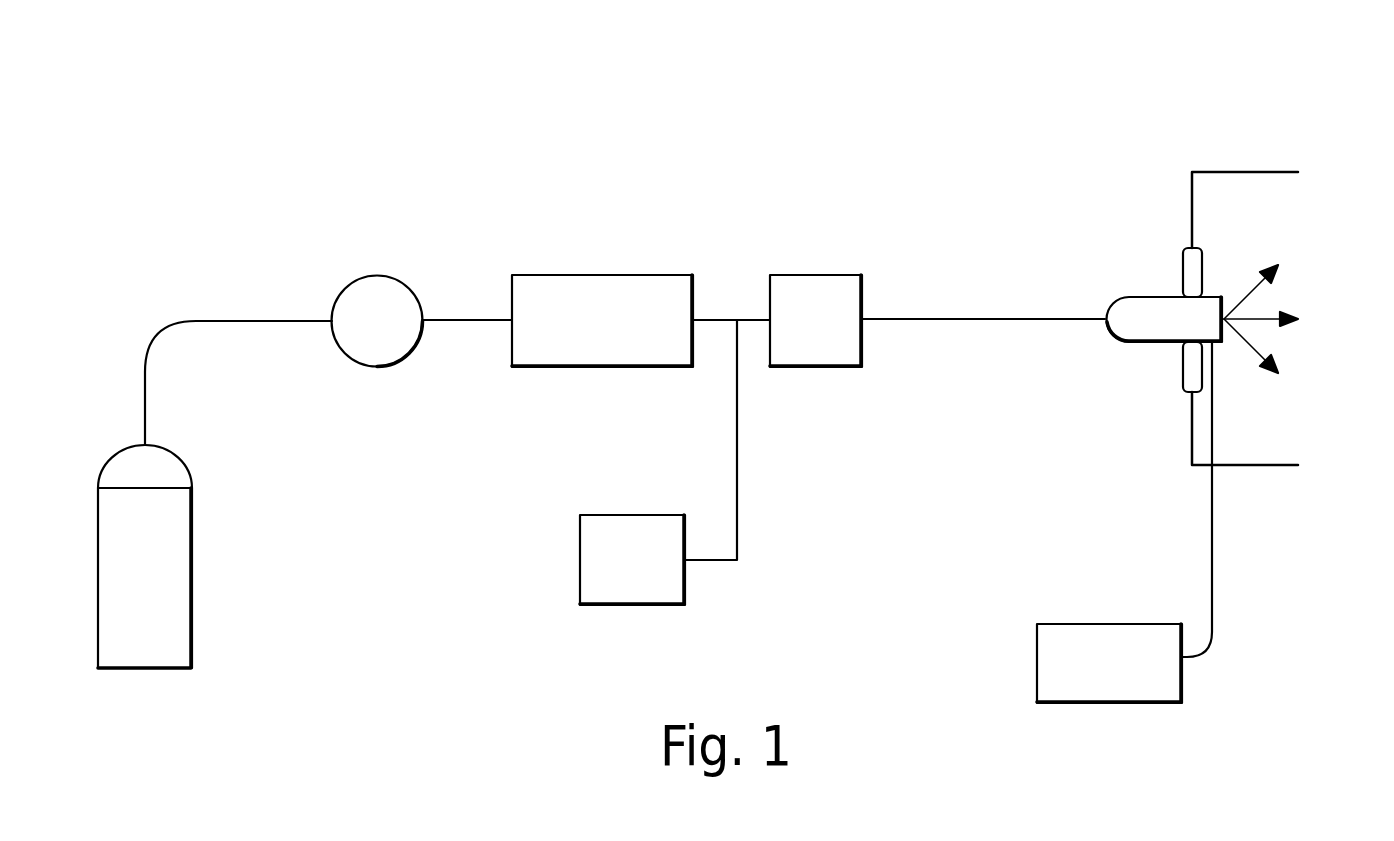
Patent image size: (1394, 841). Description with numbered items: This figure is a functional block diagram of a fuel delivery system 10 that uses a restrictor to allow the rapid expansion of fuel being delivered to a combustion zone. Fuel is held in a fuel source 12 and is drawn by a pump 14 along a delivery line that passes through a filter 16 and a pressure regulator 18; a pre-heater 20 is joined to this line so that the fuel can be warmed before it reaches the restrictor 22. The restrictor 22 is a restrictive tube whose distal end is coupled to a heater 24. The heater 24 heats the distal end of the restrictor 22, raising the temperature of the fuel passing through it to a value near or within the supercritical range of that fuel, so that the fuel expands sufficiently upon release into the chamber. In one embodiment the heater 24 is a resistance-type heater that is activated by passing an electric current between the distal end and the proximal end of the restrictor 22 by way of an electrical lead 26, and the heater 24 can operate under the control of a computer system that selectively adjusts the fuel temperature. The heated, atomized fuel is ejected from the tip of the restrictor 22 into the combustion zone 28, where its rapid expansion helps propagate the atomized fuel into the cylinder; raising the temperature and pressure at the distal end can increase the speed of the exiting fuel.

The fuel delivery system 10 is at (1093, 87).
The fuel source 12 is at (192, 545).
The pump 14 is at (374, 275).
The filter 16 is at (611, 275).
The pressure regulator 18 is at (818, 275).
The pre-heater 20 is at (580, 566).
The restrictor 22 is at (1135, 342).
The heater 24 is at (1093, 624).
The electrical lead 26 is at (1252, 172).
The combustion zone 28 is at (1265, 232).